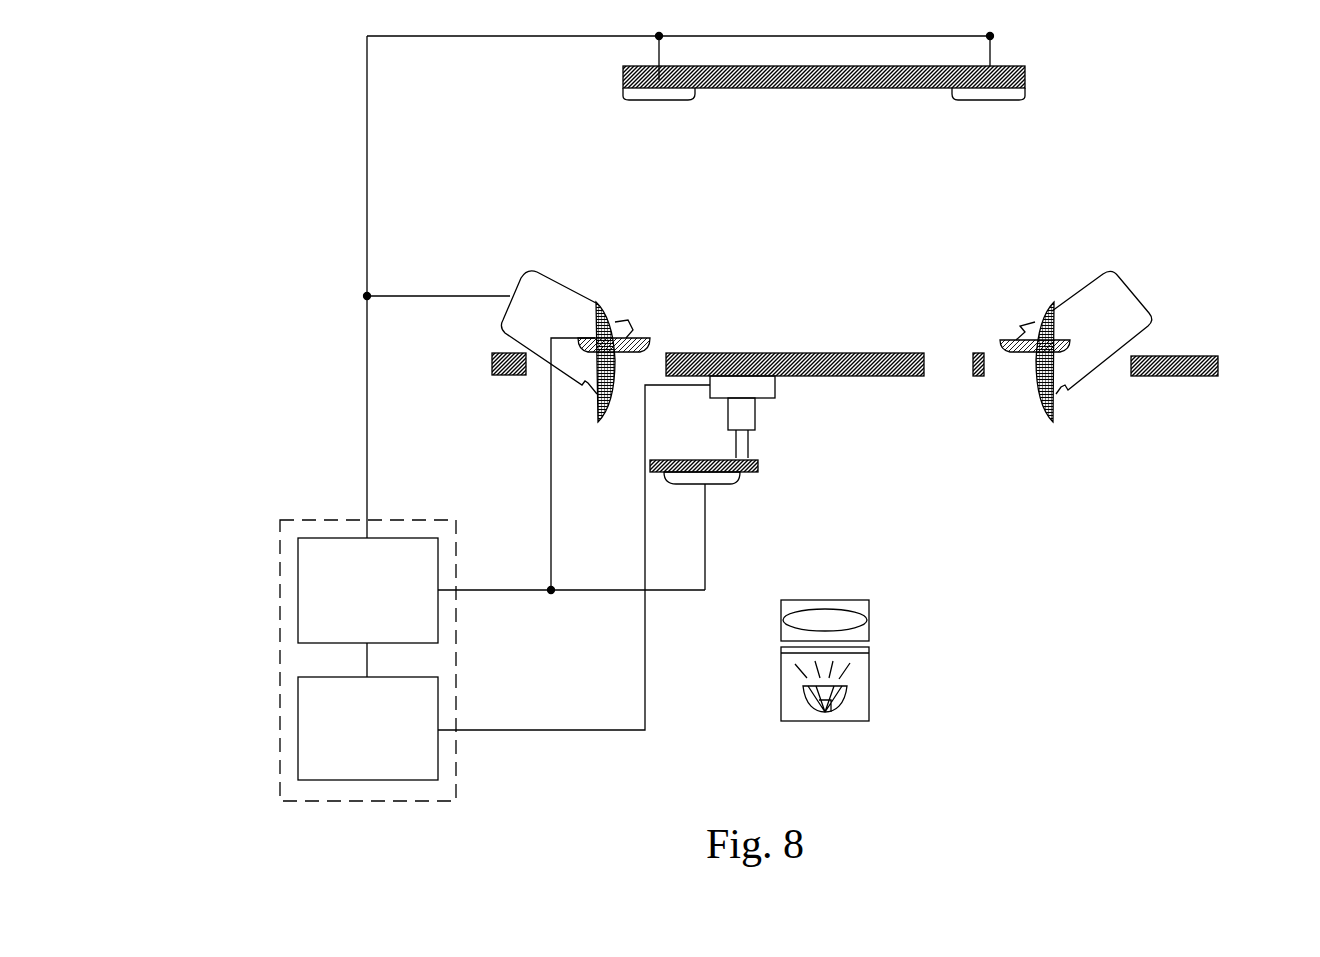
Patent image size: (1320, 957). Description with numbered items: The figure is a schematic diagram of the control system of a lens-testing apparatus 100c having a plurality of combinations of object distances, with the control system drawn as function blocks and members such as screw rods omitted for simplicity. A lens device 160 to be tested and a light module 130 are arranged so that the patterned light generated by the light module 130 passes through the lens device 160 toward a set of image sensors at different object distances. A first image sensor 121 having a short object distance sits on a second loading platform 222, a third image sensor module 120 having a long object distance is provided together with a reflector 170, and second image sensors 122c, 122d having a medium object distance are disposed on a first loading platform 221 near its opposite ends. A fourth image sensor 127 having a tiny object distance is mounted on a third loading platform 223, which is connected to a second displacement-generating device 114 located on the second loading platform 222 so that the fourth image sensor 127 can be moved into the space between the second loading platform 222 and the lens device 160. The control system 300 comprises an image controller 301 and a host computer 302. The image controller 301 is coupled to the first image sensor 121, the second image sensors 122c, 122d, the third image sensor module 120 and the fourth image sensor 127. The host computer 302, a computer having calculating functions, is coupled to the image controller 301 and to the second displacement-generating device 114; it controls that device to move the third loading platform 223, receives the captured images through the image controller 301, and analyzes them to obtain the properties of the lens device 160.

The lens-testing apparatus 100c is at (1250, 158).
The first loading platform 221 is at (1025, 80).
The second image sensor 122c is at (637, 92).
The second image sensor 122d is at (1013, 92).
The third image sensor module 120 is at (540, 285).
The first image sensor 121 is at (650, 338).
The reflector 170 is at (598, 405).
The second displacement-generating device 114 is at (742, 410).
The third loading platform 223 is at (758, 466).
The fourth image sensor 127 is at (674, 484).
The second loading platform 222 is at (1218, 363).
The control system 300 is at (280, 672).
The image controller 301 is at (298, 590).
The host computer 302 is at (298, 730).
The lens device 160 is at (869, 624).
The light module 130 is at (878, 686).